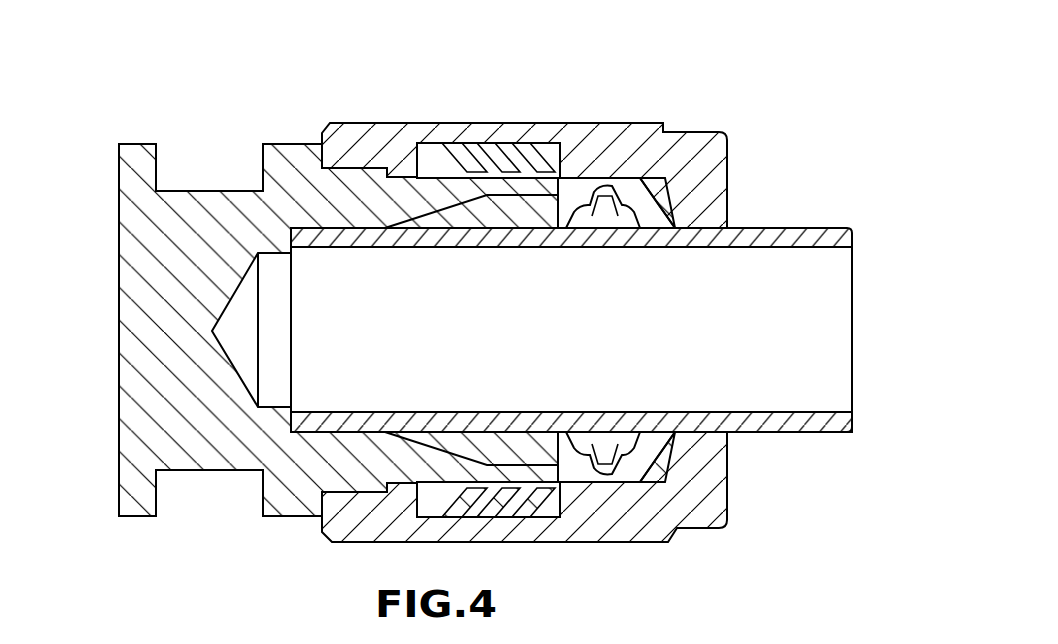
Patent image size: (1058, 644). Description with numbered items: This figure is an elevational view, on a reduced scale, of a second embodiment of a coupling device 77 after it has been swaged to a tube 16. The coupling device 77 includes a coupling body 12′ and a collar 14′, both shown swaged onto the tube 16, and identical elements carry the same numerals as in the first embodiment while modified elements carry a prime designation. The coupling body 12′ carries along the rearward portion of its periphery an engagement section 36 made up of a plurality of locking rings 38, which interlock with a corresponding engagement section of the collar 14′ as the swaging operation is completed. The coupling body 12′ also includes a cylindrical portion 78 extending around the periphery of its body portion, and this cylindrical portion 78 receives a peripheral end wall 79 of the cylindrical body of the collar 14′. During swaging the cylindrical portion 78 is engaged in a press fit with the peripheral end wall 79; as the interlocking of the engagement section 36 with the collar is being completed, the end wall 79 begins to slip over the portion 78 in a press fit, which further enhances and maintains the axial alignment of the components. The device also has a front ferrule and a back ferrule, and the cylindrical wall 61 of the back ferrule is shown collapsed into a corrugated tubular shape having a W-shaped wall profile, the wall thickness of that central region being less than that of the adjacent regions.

The coupling device 77 is at (735, 103).
The coupling body 12′ is at (146, 226).
The peripheral end wall 79 is at (361, 130).
The collar 14′ is at (713, 188).
The cylindrical portion 78 is at (360, 178).
The engagement section 36 is at (483, 160).
The locking rings 38 is at (437, 172).
The cylindrical wall 61 is at (604, 222).
The tube 16 is at (822, 228).